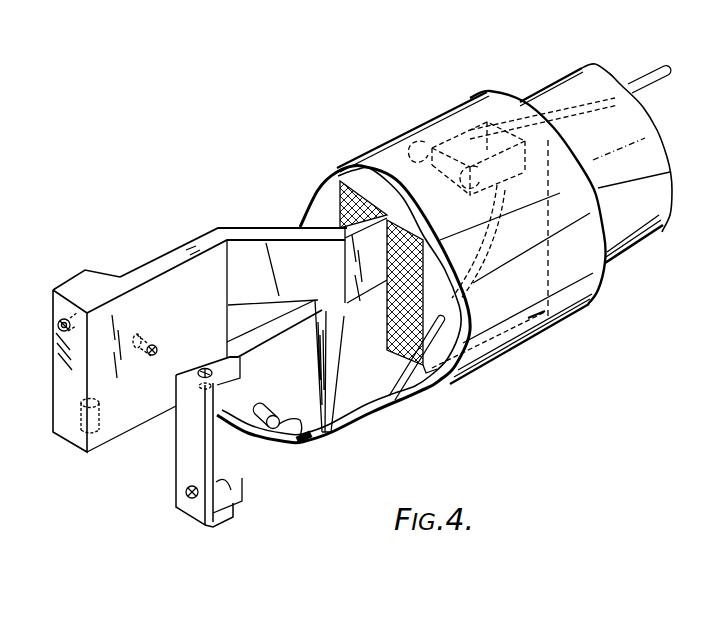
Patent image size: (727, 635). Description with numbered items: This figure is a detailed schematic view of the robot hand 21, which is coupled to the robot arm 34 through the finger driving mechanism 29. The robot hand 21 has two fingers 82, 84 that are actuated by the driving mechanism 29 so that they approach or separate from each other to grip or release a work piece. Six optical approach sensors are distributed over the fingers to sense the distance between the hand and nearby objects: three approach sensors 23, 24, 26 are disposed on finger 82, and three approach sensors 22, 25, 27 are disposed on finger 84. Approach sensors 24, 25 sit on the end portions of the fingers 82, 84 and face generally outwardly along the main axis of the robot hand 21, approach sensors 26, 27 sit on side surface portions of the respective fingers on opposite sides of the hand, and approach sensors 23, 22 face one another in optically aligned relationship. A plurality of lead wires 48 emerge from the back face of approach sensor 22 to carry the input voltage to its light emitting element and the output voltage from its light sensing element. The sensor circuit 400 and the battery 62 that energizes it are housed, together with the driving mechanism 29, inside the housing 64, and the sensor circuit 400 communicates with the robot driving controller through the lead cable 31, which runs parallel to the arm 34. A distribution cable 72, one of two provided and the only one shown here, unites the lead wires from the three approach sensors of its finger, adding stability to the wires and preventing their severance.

The robot hand 21 is at (297, 462).
The approach sensor 22 is at (268, 402).
The approach sensor 23 is at (156, 346).
The approach sensor 24 is at (66, 319).
The approach sensor 25 is at (198, 506).
The approach sensor 26 is at (80, 434).
The approach sensor 27 is at (201, 384).
The finger driving mechanism 29 is at (538, 328).
The lead cable 31 is at (645, 80).
The arm 34 is at (659, 236).
The lead wires 48 is at (311, 441).
The battery 62 is at (527, 200).
The housing 64 is at (338, 168).
The distribution cable 72 is at (404, 394).
The finger 82 is at (247, 228).
The finger 84 is at (229, 528).
The sensor circuit 400 is at (468, 128).